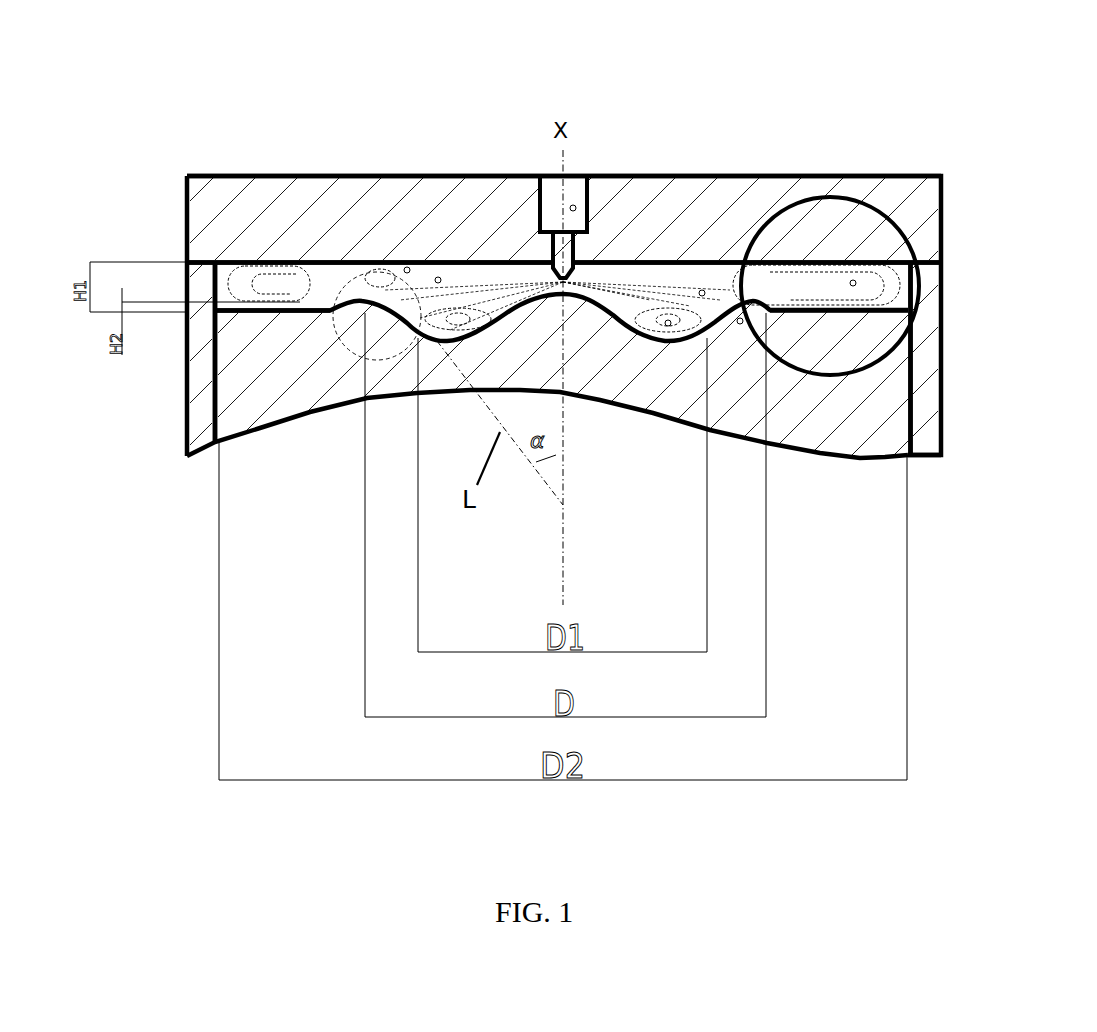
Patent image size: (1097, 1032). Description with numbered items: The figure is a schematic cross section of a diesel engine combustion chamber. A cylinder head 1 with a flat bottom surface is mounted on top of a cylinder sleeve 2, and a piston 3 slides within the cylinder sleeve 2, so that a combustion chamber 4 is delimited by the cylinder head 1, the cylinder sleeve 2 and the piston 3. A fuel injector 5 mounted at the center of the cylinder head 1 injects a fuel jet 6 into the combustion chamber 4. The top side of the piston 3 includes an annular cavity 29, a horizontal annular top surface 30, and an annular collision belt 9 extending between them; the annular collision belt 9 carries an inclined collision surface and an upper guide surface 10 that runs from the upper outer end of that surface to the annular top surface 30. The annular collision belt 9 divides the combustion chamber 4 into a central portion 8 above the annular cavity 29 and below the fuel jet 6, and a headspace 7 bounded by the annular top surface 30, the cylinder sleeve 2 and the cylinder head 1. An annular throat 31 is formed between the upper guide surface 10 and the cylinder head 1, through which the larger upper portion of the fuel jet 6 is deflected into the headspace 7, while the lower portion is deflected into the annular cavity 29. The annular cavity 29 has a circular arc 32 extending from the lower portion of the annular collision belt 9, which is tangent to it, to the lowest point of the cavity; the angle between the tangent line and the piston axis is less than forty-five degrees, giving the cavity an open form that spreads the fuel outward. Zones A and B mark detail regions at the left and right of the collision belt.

The cylinder head 1 is at (243, 218).
The cylinder sleeve 2 is at (200, 270).
The piston 3 is at (247, 327).
The combustion chamber 4 is at (365, 312).
The fuel injector 5 is at (573, 208).
The fuel jet 6 is at (702, 293).
The headspace 7 is at (853, 283).
The central portion 8 is at (745, 325).
The annular collision belt 9 is at (740, 321).
The upper guide surface 10 is at (762, 300).
The annular cavity 29 is at (610, 392).
The annular top surface 30 is at (315, 308).
The annular throat 31 is at (367, 273).
The circular arc 32 is at (437, 341).
The detail zone A is at (407, 270).
The detail zone B is at (880, 268).